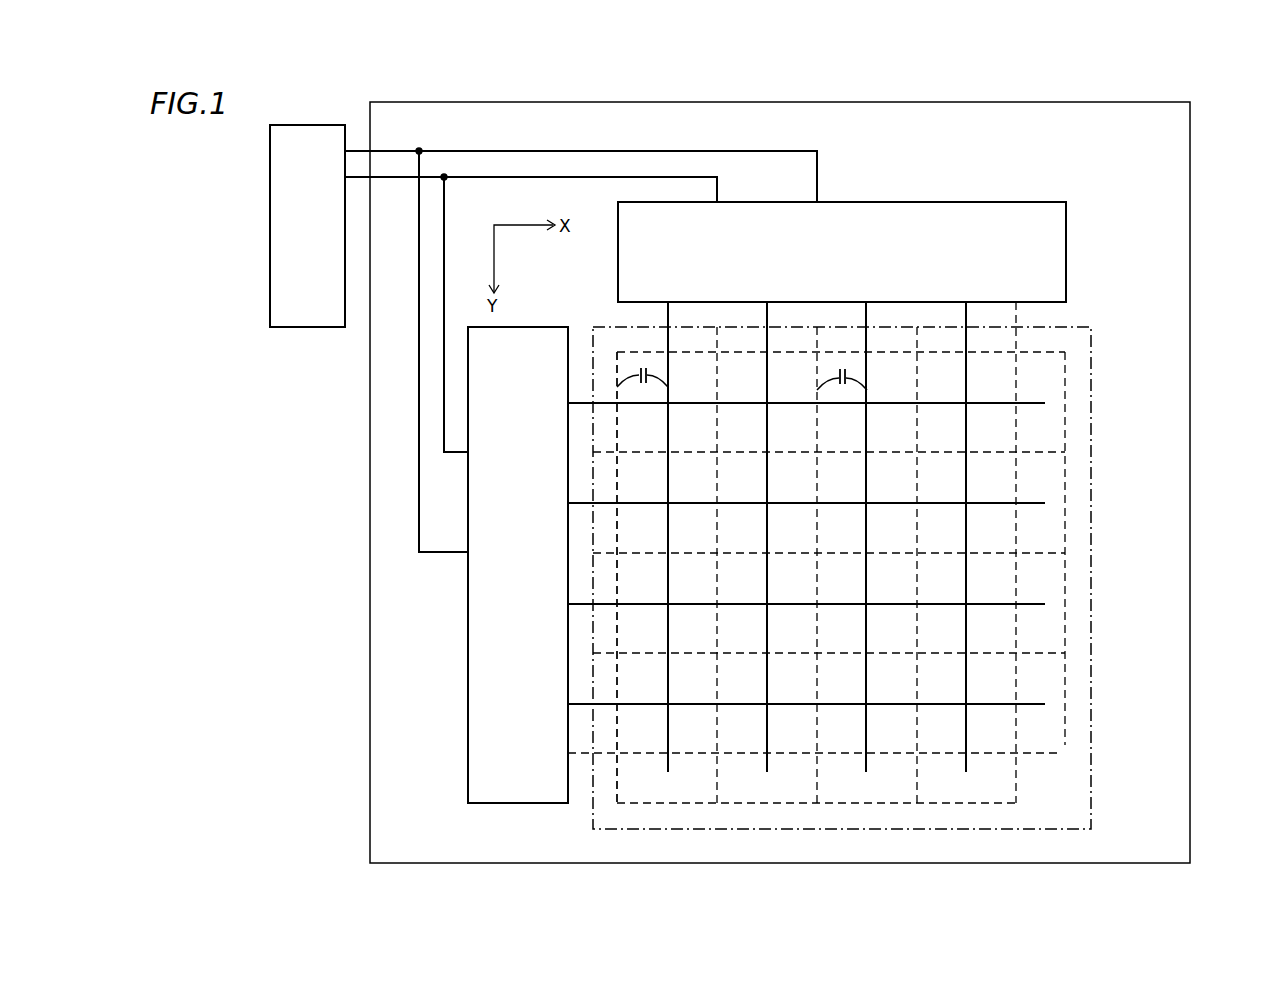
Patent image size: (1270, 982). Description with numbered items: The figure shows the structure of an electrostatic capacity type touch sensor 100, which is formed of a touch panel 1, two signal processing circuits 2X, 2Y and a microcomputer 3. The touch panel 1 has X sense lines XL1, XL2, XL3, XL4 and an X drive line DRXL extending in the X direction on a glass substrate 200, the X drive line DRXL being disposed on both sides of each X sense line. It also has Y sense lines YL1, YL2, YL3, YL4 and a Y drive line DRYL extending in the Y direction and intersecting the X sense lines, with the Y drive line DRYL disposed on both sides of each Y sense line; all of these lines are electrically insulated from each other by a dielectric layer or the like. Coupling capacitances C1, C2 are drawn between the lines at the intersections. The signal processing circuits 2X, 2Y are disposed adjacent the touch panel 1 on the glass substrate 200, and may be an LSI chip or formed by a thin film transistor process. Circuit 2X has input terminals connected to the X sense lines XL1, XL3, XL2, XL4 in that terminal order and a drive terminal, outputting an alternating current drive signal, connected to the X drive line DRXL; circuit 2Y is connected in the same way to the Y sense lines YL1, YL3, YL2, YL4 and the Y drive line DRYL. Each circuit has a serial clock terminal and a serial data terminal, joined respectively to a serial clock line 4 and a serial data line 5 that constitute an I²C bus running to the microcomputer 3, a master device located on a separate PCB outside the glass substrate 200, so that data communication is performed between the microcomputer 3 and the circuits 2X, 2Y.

The electrostatic capacity type touch sensor 100 is at (921, 131).
The glass substrate 200 is at (1181, 318).
The touch panel 1 is at (1076, 327).
The signal processing circuit 2X is at (468, 655).
The signal processing circuit 2Y is at (964, 214).
The microcomputer 3 is at (287, 327).
The serial clock line 4 is at (590, 177).
The serial data line 5 is at (533, 151).
The capacitor C1 is at (654, 381).
The capacitor C2 is at (854, 382).
The X sense line XL1 is at (1027, 403).
The X sense line XL2 is at (1027, 503).
The X sense line XL3 is at (1027, 604).
The X sense line XL4 is at (1027, 704).
The Y sense line YL1 is at (668, 772).
The Y sense line YL2 is at (767, 772).
The Y sense line YL3 is at (866, 772).
The Y sense line YL4 is at (966, 772).
The X drive line DRXL is at (1027, 753).
The Y drive line DRYL is at (620, 772).